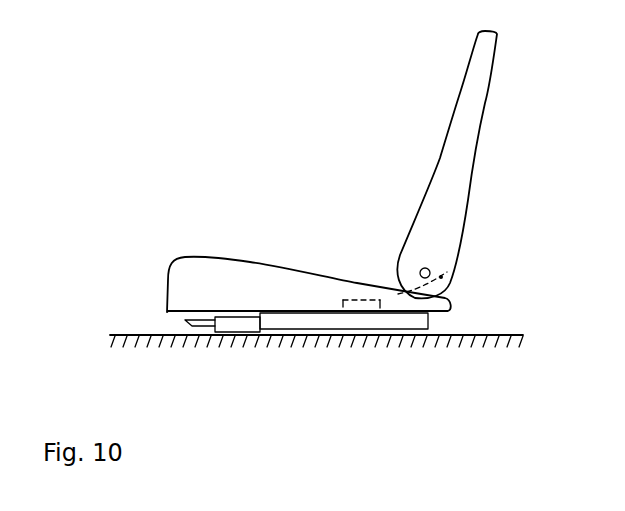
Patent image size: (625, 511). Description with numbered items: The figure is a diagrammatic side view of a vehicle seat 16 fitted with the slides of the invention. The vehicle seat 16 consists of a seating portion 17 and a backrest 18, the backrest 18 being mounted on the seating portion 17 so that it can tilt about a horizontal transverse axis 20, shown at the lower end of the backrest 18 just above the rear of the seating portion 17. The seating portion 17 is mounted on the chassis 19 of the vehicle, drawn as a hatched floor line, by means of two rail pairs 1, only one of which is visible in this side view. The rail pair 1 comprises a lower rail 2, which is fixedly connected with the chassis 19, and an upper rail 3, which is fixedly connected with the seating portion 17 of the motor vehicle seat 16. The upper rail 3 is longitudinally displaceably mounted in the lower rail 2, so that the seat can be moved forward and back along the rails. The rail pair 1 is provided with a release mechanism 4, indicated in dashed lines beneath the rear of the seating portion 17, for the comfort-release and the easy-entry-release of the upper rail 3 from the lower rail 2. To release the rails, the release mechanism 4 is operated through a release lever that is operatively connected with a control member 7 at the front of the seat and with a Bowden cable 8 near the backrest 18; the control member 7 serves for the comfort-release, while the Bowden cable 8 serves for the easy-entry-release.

The rail pair 1 is at (298, 340).
The lower rail 2 is at (238, 327).
The upper rail 3 is at (393, 318).
The release mechanism 4 is at (357, 292).
The control member 7 is at (184, 321).
The Bowden cable 8 is at (393, 293).
The vehicle seat 16 is at (348, 76).
The seating portion 17 is at (249, 270).
The backrest 18 is at (482, 100).
The chassis 19 is at (490, 338).
The horizontal transverse axis 20 is at (424, 268).